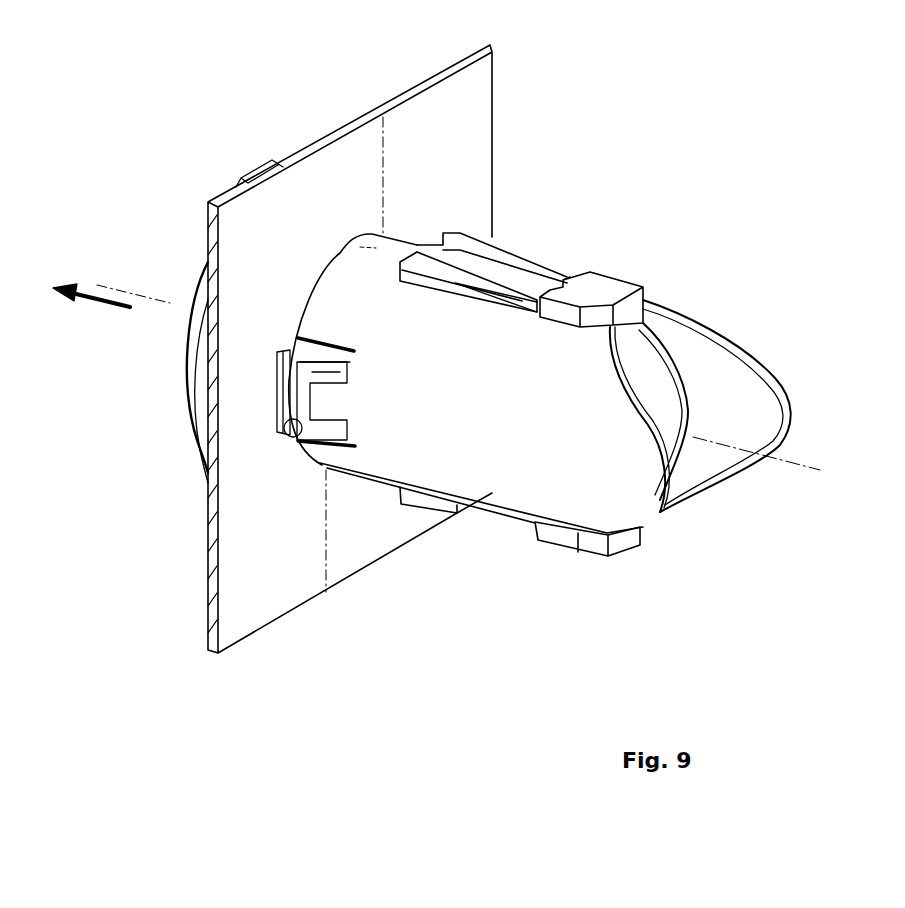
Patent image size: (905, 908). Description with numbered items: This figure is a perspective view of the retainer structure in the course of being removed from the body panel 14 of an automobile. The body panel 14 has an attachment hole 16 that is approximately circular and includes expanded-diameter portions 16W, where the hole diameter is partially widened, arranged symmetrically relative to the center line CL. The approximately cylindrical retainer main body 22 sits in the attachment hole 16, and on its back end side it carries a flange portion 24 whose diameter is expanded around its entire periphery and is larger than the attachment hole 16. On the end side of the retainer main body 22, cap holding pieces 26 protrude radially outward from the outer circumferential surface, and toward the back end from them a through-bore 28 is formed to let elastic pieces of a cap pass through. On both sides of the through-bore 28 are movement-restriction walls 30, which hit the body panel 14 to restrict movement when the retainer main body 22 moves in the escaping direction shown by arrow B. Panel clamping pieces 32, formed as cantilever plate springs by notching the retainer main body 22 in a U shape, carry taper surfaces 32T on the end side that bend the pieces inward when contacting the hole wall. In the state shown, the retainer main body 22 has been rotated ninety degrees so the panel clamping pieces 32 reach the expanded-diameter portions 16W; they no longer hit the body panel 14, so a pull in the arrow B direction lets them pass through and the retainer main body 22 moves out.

The body panel 14 is at (425, 108).
The attachment hole 16 is at (340, 272).
The expanded-diameter portions 16W is at (298, 447).
The retainer main body 22 is at (705, 322).
The flange portion 24 is at (197, 430).
The cap holding pieces 26 is at (608, 280).
The through-bore 28 is at (523, 295).
The movement-restriction walls 30 is at (508, 252).
The panel clamping pieces 32 is at (308, 355).
The taper surfaces 32T is at (318, 372).
The arrow B is at (102, 302).
The center line CL is at (798, 470).